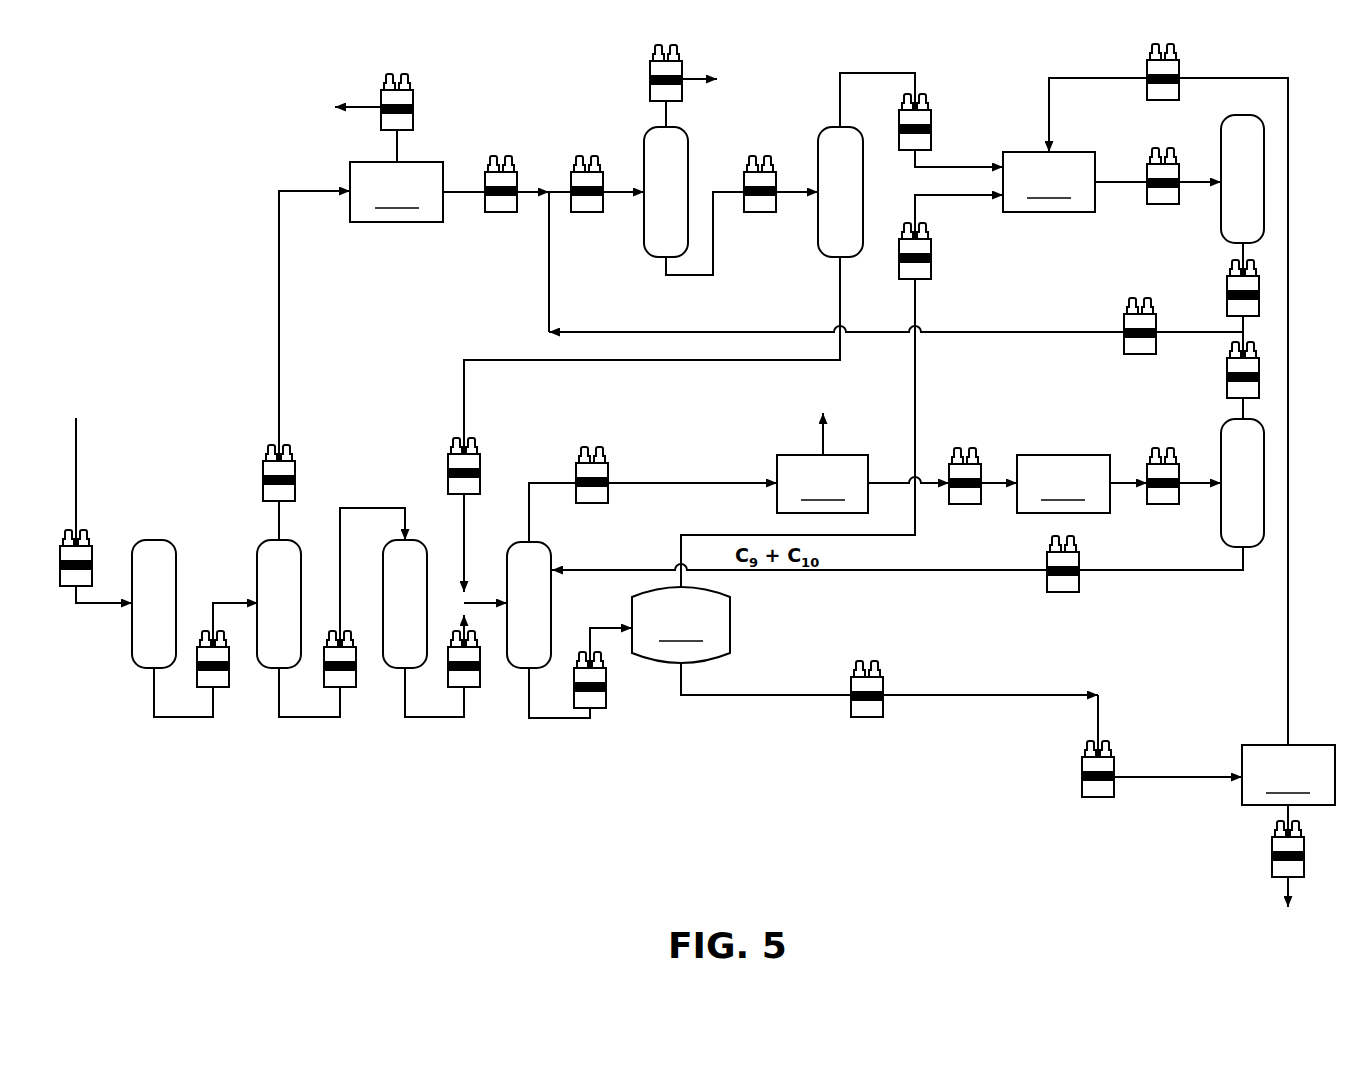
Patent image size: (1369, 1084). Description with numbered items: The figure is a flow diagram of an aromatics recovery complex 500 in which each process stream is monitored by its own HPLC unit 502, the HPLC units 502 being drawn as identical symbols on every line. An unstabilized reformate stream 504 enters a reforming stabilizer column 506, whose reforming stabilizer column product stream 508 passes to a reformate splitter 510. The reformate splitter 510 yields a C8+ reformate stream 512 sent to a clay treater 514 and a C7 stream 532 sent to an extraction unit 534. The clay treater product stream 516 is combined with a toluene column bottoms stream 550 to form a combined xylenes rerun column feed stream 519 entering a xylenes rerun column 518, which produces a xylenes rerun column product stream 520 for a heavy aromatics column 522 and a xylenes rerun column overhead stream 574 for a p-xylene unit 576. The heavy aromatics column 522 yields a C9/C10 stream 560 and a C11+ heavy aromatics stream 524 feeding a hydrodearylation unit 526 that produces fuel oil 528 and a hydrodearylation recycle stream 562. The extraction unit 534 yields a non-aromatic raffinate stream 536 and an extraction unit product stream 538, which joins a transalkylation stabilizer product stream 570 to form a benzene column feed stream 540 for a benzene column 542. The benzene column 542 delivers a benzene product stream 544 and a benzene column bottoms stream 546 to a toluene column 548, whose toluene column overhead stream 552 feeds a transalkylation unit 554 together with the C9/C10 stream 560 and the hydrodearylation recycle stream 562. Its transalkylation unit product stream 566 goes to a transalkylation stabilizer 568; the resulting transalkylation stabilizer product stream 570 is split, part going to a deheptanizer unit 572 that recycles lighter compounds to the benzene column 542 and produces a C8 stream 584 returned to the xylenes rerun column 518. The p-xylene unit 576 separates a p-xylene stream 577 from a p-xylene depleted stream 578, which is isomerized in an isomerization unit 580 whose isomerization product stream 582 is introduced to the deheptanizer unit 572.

The aromatics recovery complex 500 is at (127, 103).
The HPLC unit 502 is at (410, 90).
The unstabilized reformate stream 504 is at (78, 443).
The reforming stabilizer column 506 is at (132, 633).
The reforming stabilizer column product stream 508 is at (197, 718).
The reformate splitter 510 is at (260, 540).
The C8+ reformate stream 512 is at (322, 718).
The clay treater 514 is at (393, 668).
The clay treater product stream 516 is at (447, 718).
The xylenes rerun column 518 is at (507, 668).
The combined xylenes rerun column feed stream 519 is at (480, 600).
The xylenes rerun column product stream 520 is at (570, 718).
The heavy aromatics column 522 is at (681, 625).
The C11+ heavy aromatics stream 524 is at (785, 697).
The hydrodearylation unit 526 is at (1288, 775).
The fuel oil 528 is at (1288, 885).
The C7 stream 532 is at (278, 325).
The extraction unit 534 is at (396, 192).
The non-aromatic raffinate stream 536 is at (393, 146).
The extraction unit product stream 538 is at (530, 195).
The benzene column feed stream 540 is at (622, 190).
The benzene column 542 is at (644, 232).
The benzene product stream 544 is at (666, 118).
The benzene column bottoms stream 546 is at (713, 255).
The toluene column 548 is at (822, 252).
The toluene column bottoms stream 550 is at (460, 510).
The toluene column overhead stream 552 is at (840, 98).
The transalkylation unit 554 is at (1049, 182).
The C9/C10 stream 560 is at (918, 388).
The hydrodearylation recycle stream 562 is at (1288, 645).
The transalkylation unit product stream 566 is at (1127, 185).
The transalkylation stabilizer 568 is at (1265, 157).
The transalkylation stabilizer product stream 570 is at (1245, 252).
The deheptanizer unit 572 is at (1265, 445).
The xylenes rerun column overhead stream 574 is at (528, 515).
The p-xylene unit 576 is at (822, 484).
The p-xylene stream 577 is at (817, 430).
The p-xylene depleted stream 578 is at (927, 488).
The isomerization unit 580 is at (1063, 484).
The isomerization product stream 582 is at (1200, 480).
The C8 stream 584 is at (1165, 572).